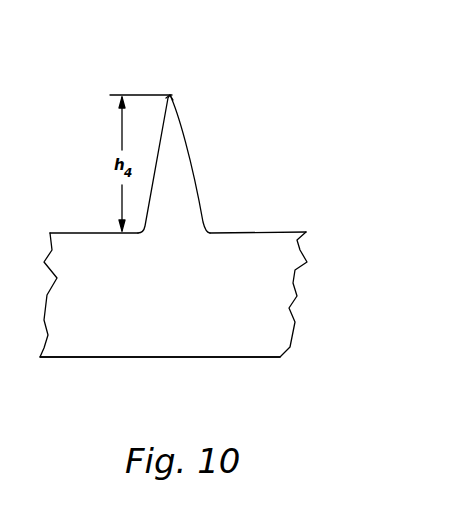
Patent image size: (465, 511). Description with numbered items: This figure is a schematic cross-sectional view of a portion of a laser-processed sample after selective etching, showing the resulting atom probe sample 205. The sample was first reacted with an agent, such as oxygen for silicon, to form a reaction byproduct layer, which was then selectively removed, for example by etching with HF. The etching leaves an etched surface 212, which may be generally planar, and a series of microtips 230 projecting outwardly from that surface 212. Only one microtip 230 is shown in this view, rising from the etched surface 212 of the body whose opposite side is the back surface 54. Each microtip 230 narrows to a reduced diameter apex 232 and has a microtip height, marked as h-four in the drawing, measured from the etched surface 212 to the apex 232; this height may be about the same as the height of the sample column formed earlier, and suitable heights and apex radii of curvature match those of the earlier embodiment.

The back surface 54 is at (77, 358).
The etched surface 212 is at (243, 232).
The microtip 230 is at (180, 178).
The apex 232 is at (174, 100).
The atom probe sample 205 is at (288, 130).